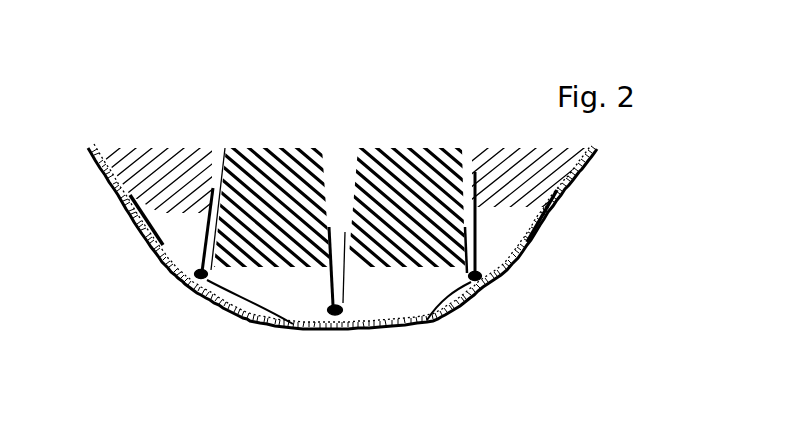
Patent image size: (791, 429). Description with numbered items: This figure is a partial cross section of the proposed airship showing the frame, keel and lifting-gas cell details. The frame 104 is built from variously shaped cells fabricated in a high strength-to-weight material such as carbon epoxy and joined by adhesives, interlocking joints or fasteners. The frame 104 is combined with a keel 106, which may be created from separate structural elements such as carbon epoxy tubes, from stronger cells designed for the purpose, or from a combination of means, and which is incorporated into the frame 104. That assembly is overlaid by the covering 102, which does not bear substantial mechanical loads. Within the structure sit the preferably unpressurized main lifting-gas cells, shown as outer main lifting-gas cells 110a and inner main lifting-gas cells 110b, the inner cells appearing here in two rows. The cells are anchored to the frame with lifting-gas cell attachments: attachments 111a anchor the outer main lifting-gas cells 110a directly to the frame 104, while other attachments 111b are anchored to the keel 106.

The covering 102 is at (545, 229).
The frame 104 is at (512, 266).
The keel 106 is at (427, 322).
The outer main lifting-gas cells 110a is at (523, 157).
The inner main lifting-gas cells 110b is at (410, 162).
The lifting-gas cell attachments 111a is at (148, 226).
The lifting-gas cell attachments 111b is at (205, 236).